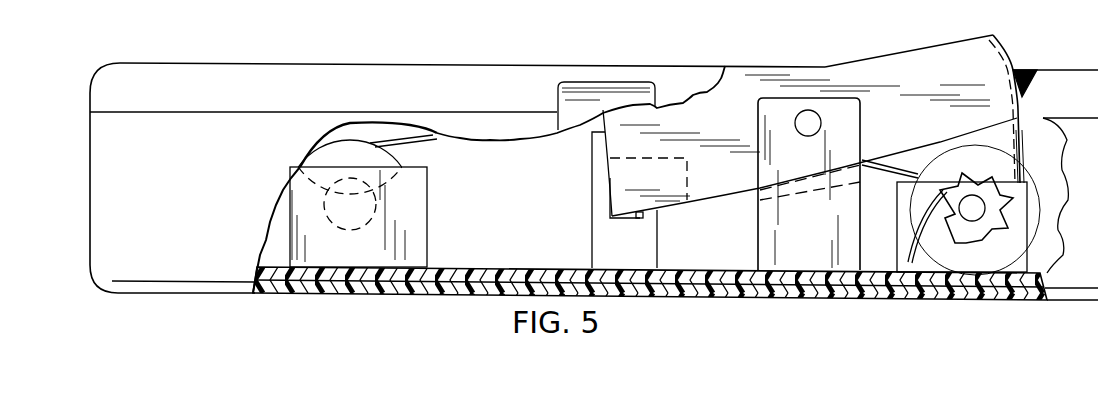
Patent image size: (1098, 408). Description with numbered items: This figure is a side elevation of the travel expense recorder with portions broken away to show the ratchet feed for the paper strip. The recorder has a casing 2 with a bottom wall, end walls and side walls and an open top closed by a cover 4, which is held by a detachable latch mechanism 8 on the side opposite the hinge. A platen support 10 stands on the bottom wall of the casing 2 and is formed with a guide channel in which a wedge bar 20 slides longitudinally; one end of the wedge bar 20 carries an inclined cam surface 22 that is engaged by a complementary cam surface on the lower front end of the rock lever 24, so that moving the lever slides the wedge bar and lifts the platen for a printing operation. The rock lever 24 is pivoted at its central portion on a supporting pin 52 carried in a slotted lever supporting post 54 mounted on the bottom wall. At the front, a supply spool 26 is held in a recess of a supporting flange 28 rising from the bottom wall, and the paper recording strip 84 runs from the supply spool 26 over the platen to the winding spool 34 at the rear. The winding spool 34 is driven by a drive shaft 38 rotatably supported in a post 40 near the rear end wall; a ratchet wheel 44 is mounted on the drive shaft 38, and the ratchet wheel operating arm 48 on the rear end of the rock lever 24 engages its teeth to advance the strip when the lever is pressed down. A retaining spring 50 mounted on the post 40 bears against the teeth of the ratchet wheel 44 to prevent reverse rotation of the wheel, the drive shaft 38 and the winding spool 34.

The casing 2 is at (410, 290).
The cover 4 is at (483, 63).
The detachable latch mechanism 8 is at (632, 82).
The platen support 10 is at (592, 226).
The wedge bar 20 is at (625, 219).
The inclined cam surface 22 is at (610, 200).
The rock lever 24 is at (897, 50).
The supply spool 26 is at (302, 151).
The supporting flange 28 is at (421, 234).
The winding spool 34 is at (1036, 190).
The drive shaft 38 is at (972, 221).
The post 40 is at (899, 246).
The ratchet wheel 44 is at (1022, 250).
The ratchet wheel operating arm 48 is at (1025, 148).
The retaining spring 50 is at (920, 222).
The supporting pin 52 is at (808, 110).
The lever supporting post 54 is at (807, 168).
The paper recording strip 84 is at (433, 140).